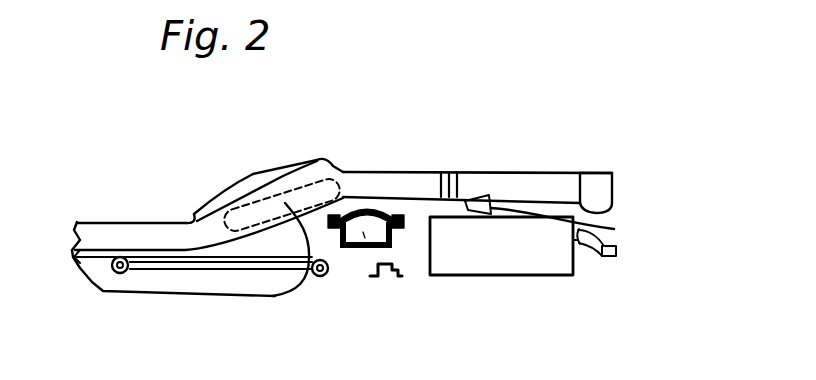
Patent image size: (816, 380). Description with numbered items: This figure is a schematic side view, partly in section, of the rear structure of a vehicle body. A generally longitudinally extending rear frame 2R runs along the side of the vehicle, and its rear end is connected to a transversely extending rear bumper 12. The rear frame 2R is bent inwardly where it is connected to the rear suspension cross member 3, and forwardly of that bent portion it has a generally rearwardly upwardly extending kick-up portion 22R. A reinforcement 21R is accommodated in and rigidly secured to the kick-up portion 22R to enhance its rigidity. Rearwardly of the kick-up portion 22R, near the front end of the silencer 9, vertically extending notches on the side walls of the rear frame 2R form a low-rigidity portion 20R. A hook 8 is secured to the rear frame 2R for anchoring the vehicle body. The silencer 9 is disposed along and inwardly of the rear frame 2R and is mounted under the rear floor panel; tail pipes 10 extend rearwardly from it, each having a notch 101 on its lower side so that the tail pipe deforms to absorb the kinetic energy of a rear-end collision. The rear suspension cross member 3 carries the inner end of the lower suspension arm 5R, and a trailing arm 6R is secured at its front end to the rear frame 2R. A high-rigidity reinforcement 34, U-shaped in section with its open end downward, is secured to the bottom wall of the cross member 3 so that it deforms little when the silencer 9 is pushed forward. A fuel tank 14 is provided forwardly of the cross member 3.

The rear frame 2R is at (400, 172).
The rear bumper 12 is at (602, 185).
The low-rigidity portion 20R is at (461, 171).
The kick-up portion 22R is at (255, 176).
The reinforcement 21R is at (343, 178).
The fuel tank 14 is at (228, 283).
The trailing arm 6R is at (299, 258).
The rear suspension cross member 3 is at (345, 249).
The reinforcement 34 is at (357, 249).
The lower suspension arm 5R is at (396, 278).
The hook 8 is at (616, 229).
The silencer 9 is at (517, 262).
The tail pipe 10 is at (616, 251).
The notch 101 is at (578, 240).